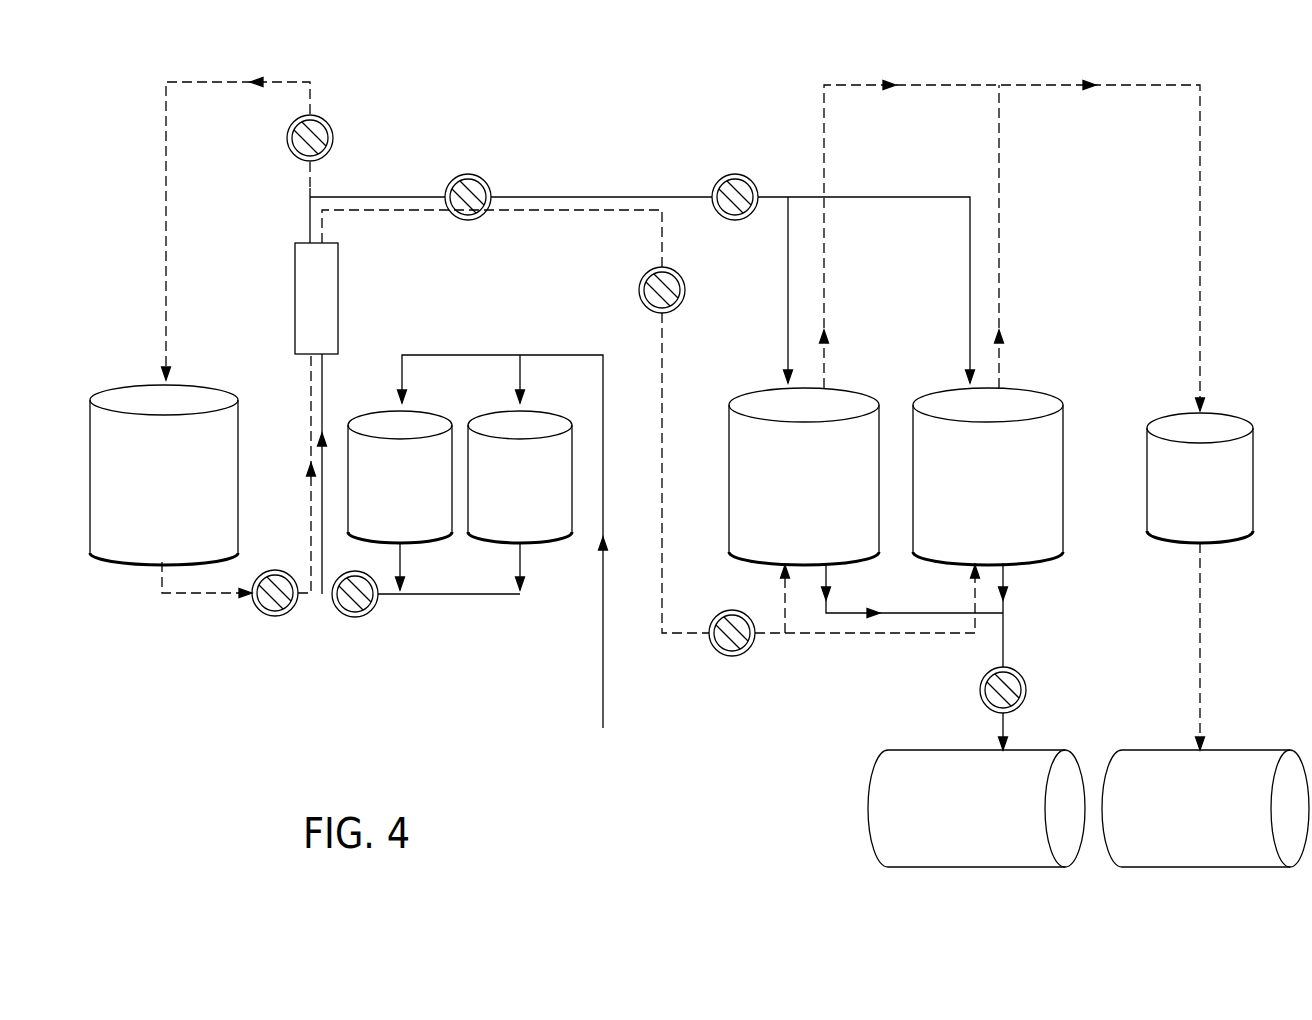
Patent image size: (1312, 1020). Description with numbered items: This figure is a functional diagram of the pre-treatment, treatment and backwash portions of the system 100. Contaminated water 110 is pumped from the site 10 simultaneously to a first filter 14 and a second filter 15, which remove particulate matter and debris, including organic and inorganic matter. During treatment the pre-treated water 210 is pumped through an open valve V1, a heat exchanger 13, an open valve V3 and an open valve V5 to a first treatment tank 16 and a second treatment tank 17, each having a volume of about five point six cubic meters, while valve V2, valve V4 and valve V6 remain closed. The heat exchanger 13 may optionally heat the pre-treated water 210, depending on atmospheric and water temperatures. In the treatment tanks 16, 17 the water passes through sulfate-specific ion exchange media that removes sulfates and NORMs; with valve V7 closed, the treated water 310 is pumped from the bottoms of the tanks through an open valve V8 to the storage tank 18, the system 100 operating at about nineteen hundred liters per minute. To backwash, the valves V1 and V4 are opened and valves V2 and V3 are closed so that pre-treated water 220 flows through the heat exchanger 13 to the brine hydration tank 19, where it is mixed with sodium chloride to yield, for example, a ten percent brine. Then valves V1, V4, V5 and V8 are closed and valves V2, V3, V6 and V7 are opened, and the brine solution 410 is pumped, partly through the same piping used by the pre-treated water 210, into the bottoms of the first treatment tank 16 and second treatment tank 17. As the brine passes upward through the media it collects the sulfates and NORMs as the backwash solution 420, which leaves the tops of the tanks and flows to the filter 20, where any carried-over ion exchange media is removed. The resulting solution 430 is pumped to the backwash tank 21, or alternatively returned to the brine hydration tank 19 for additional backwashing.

The system 100 is at (440, 89).
The site 10 is at (602, 764).
The contaminated water 110 is at (599, 691).
The pre-treated water 210 is at (590, 196).
The pre-treated water 220 is at (205, 84).
The treated water 310 is at (1005, 634).
The brine solution 410 is at (388, 212).
The backwash solution 420 is at (1203, 249).
The resulting solution 430 is at (1203, 656).
The heat exchanger 13 is at (328, 310).
The first filter 14 is at (386, 512).
The second filter 15 is at (506, 512).
The first treatment tank 16 is at (790, 522).
The second treatment tank 17 is at (974, 522).
The storage tank 18 is at (949, 847).
The brine hydration tank 19 is at (150, 539).
The filter 20 is at (1186, 500).
The backwash tank 21 is at (1184, 847).
The valve V1 is at (371, 612).
The valve V2 is at (259, 611).
The valve V3 is at (484, 181).
The valve V4 is at (326, 122).
The valve V5 is at (751, 181).
The valve V6 is at (678, 274).
The valve V7 is at (748, 651).
The valve V8 is at (1019, 674).